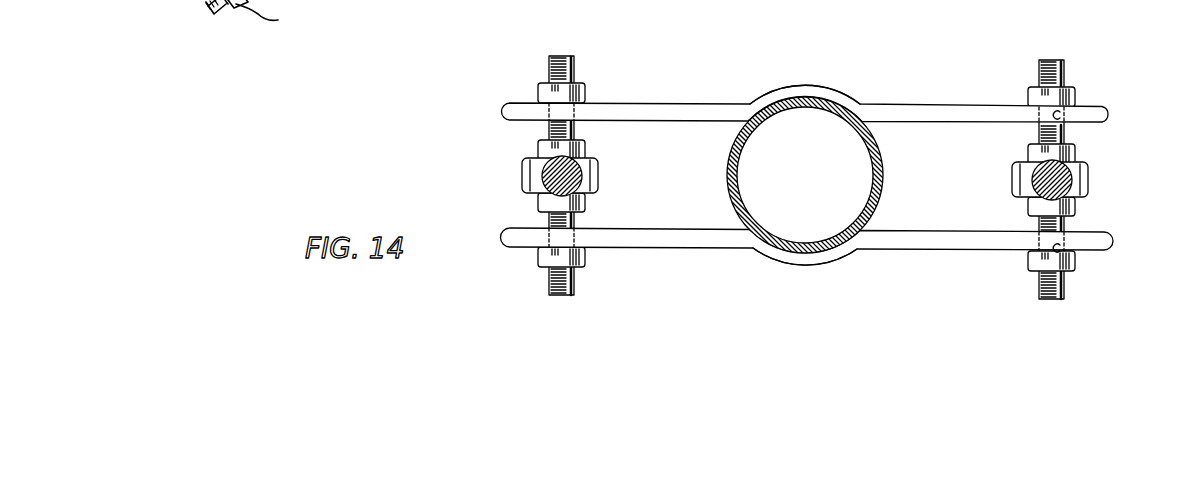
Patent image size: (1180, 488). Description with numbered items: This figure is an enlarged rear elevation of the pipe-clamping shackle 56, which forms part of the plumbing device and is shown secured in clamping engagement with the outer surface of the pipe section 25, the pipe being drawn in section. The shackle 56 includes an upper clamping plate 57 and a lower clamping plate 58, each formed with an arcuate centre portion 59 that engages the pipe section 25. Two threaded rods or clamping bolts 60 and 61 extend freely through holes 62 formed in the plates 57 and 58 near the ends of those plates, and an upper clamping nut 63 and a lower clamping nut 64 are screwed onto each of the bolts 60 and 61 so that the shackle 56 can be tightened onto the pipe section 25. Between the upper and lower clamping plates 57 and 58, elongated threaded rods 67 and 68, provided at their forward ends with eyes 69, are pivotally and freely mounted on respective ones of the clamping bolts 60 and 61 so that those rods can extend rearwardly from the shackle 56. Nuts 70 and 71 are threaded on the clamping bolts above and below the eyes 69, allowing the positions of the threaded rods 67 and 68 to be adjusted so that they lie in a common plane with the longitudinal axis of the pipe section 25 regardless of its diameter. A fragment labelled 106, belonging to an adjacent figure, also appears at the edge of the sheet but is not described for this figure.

The pipe section 25 is at (884, 183).
The pipe-clamping shackle 56 is at (901, 72).
The upper clamping plate 57 is at (672, 103).
The lower clamping plate 58 is at (683, 247).
The arcuate centre portion 59 is at (823, 86).
The clamping bolt 60 is at (1062, 64).
The clamping bolt 61 is at (550, 290).
The hole 62 is at (1062, 115).
The upper clamping nut 63 is at (541, 93).
The lower clamping nut 64 is at (585, 256).
The elongated threaded rod 67 is at (1090, 187).
The elongated threaded rod 68 is at (599, 187).
The eye 69 is at (532, 176).
The nut 70 is at (586, 152).
The nut 71 is at (543, 205).
The fragment of adjacent figure 106 is at (264, 14).